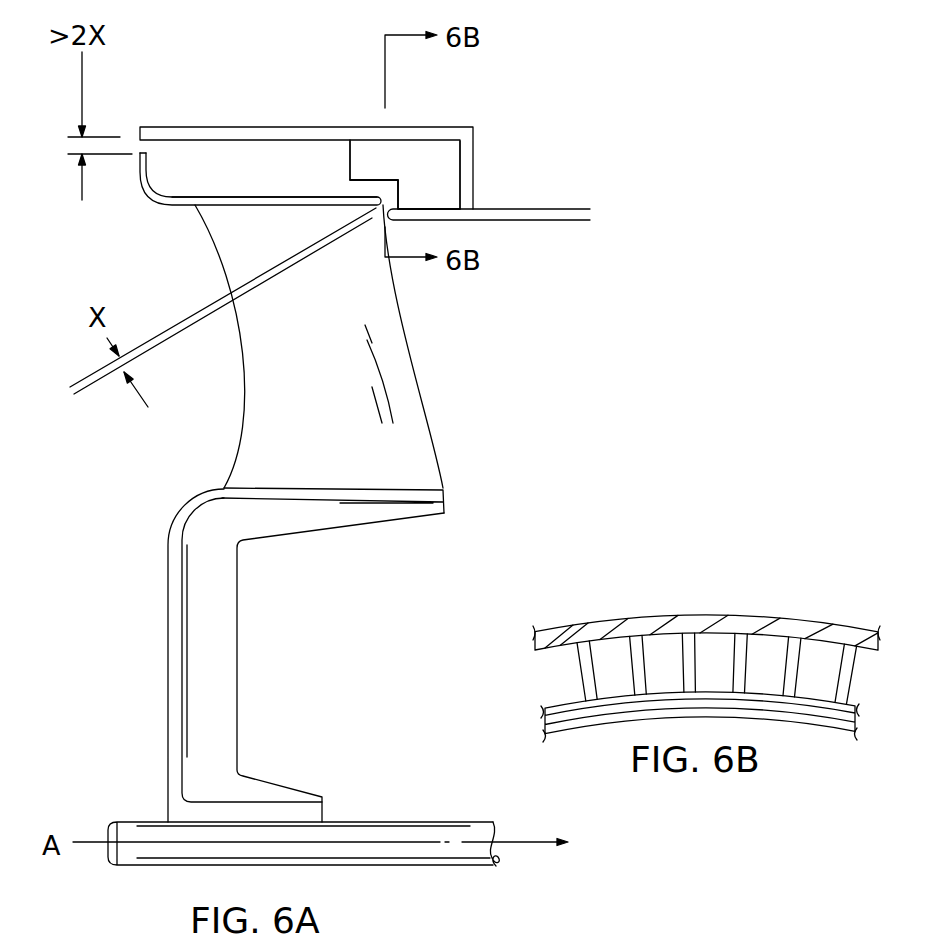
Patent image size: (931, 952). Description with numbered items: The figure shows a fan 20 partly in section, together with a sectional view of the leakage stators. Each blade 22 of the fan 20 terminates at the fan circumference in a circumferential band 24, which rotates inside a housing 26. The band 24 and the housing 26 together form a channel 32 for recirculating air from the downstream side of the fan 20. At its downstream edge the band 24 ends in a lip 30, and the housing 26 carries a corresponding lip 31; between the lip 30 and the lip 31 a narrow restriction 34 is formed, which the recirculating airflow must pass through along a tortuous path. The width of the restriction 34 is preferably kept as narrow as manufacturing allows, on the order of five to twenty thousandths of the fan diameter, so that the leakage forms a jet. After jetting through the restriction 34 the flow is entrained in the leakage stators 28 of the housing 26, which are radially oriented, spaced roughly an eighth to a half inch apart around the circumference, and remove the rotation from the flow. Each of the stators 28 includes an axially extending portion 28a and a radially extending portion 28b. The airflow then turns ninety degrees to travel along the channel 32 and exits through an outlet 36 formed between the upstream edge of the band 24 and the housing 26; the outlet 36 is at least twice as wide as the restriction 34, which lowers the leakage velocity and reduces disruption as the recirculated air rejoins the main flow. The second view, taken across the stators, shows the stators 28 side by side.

In FIG. 6A, the fan 20 is at (118, 667).
In FIG. 6A, the blade 22 is at (320, 460).
In FIG. 6A, the band 24 is at (178, 194).
In FIG. 6A, the housing 26 is at (290, 92).
In FIG. 6B, the housing 26 is at (737, 578).
In FIG. 6A, the leakage stators 28 is at (450, 146).
In FIG. 6B, the leakage stators 28 is at (573, 674).
In FIG. 6A, the axially extending portion 28a is at (373, 158).
In FIG. 6A, the radially extending portion 28b is at (435, 192).
In FIG. 6A, the lip 30 is at (363, 195).
In FIG. 6A, the lip 31 is at (391, 221).
In FIG. 6A, the channel 32 is at (250, 175).
In FIG. 6A, the restriction 34 is at (380, 213).
In FIG. 6A, the outlet 36 is at (133, 143).